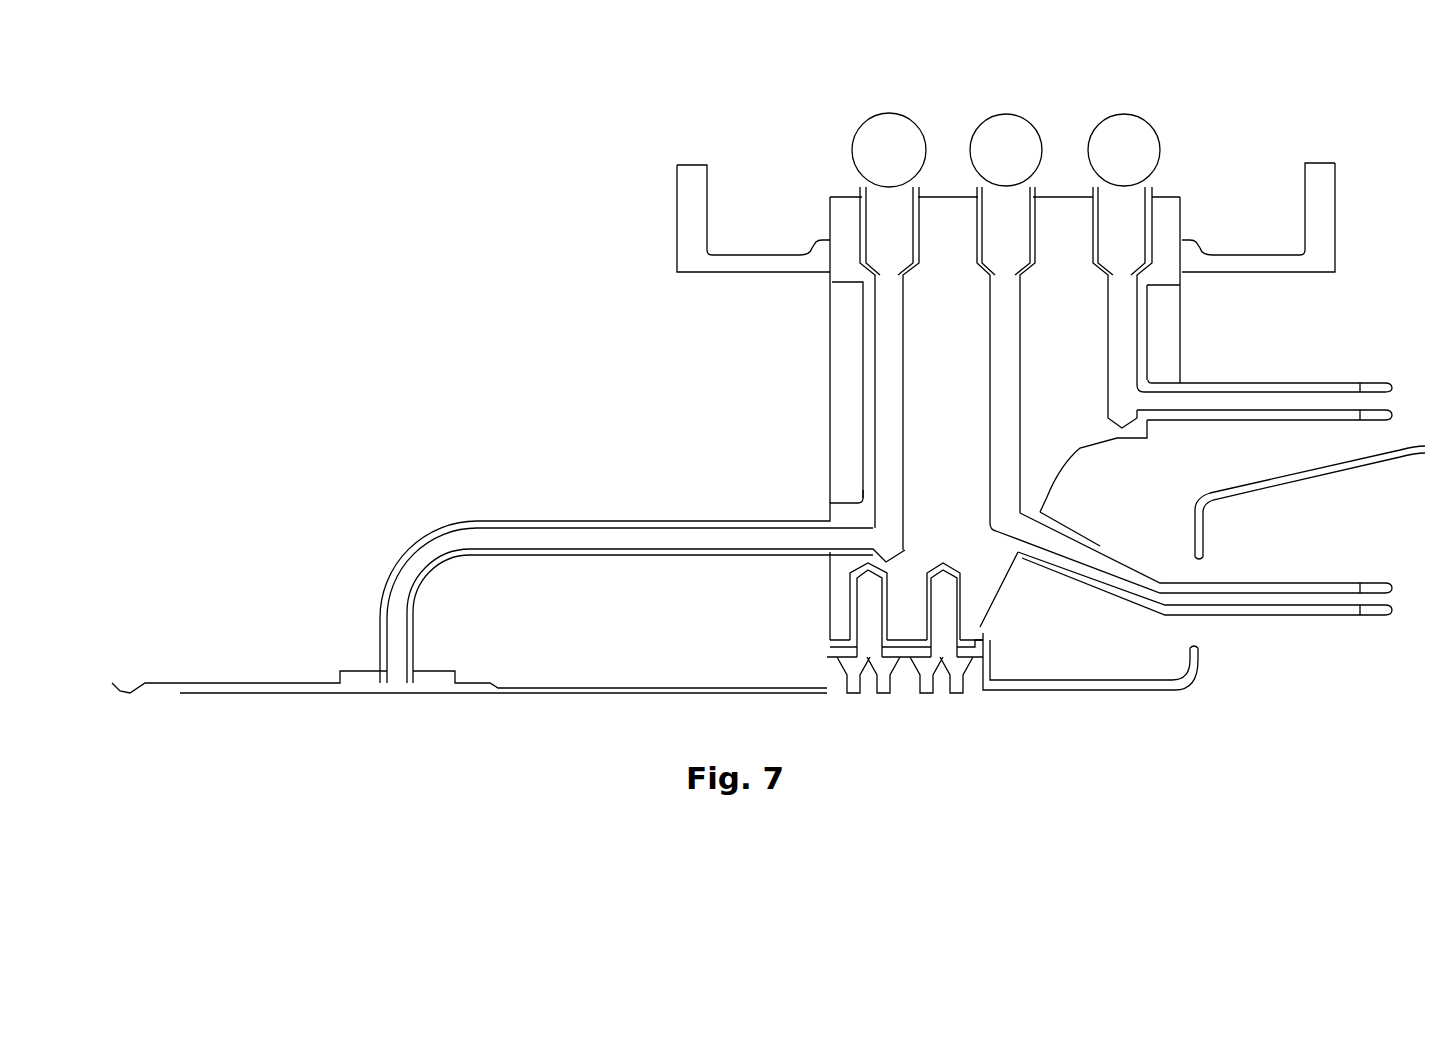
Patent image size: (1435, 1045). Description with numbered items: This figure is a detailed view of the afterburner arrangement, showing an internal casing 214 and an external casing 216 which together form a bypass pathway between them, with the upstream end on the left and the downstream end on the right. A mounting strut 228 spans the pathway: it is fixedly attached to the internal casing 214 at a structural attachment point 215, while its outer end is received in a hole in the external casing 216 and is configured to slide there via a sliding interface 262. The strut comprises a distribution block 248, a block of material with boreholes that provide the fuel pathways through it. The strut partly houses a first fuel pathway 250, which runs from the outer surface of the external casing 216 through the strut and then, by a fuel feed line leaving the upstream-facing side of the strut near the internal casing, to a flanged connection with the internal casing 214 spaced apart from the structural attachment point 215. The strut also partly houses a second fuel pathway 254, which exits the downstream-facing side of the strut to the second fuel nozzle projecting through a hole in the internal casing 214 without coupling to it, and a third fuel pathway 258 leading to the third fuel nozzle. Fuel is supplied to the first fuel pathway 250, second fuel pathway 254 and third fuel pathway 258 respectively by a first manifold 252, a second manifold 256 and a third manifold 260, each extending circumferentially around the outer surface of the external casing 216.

The internal casing 214 is at (275, 683).
The structural attachment point 215 is at (797, 646).
The external casing 216 is at (677, 213).
The mounting strut 228 is at (807, 180).
The distribution block 248 is at (945, 445).
The first fuel pathway 250 is at (632, 520).
The first manifold 252 is at (878, 118).
The second fuel pathway 254 is at (1265, 615).
The second manifold 256 is at (1000, 113).
The third fuel pathway 258 is at (1280, 383).
The third manifold 260 is at (1150, 120).
The sliding interface 262 is at (1180, 337).